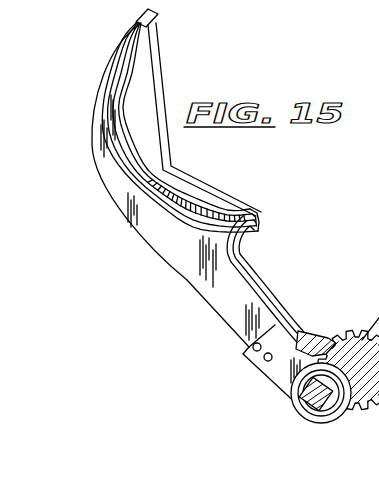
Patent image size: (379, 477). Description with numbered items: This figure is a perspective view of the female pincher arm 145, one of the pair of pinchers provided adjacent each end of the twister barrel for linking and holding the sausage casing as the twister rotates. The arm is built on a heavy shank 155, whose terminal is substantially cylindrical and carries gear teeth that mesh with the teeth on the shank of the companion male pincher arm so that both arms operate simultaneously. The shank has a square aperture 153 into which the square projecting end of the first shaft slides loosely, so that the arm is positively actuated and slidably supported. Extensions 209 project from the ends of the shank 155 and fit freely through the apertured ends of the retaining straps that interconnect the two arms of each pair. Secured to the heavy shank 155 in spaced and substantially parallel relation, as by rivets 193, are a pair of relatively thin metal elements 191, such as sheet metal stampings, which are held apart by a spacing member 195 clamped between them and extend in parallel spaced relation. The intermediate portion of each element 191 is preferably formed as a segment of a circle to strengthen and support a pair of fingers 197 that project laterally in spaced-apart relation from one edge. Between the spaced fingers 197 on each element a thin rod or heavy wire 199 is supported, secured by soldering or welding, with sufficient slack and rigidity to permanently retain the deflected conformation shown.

The female pincher arm 145 is at (313, 273).
The square aperture 153 is at (313, 407).
The heavy shank 155 is at (263, 373).
The thin metal elements 191 is at (273, 297).
The rivets 193 is at (264, 357).
The spacing member 195 is at (295, 330).
The fingers 197 is at (115, 82).
The thin rod or heavy wire 199 is at (192, 198).
The extensions 209 is at (300, 392).